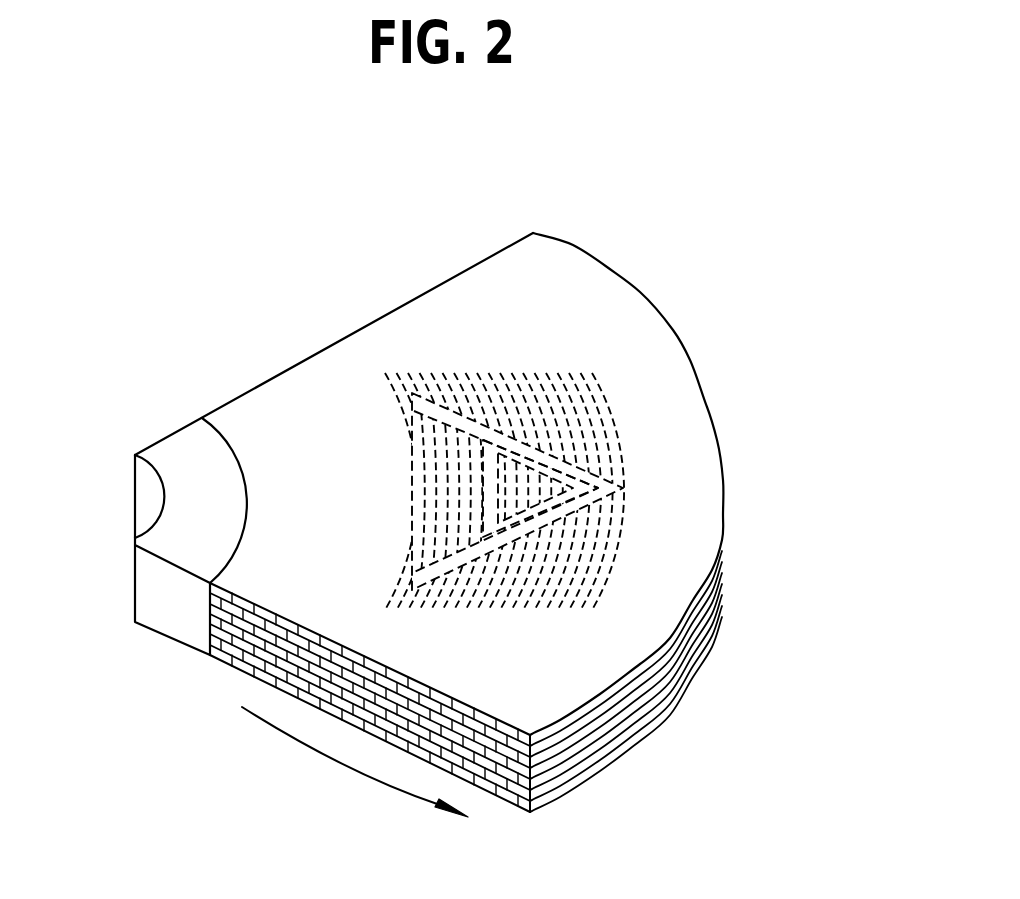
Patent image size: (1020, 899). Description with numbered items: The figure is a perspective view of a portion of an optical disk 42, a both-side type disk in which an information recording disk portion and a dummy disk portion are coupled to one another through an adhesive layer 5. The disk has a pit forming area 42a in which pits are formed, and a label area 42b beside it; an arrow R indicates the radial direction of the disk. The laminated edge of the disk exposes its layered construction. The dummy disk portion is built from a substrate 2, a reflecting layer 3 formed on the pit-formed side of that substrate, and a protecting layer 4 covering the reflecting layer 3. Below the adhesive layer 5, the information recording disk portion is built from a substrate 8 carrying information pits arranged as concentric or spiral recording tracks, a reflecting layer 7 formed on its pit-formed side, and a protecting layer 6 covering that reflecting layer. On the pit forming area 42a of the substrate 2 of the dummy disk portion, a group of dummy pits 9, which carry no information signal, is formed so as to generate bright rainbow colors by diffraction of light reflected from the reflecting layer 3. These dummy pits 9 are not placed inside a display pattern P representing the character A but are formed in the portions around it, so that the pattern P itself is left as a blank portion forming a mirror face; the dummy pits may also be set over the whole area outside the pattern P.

The optical disk 42 is at (449, 521).
The pit forming area 42a is at (353, 353).
The label area 42b is at (176, 445).
The dummy pits 9 is at (417, 500).
The display pattern P is at (597, 482).
The substrate 2 is at (542, 735).
The reflecting layer 3 is at (552, 745).
The protecting layer 4 is at (565, 752).
The adhesive layer 5 is at (575, 757).
The protecting layer 6 is at (565, 767).
The reflecting layer 7 is at (557, 785).
The substrate 8 is at (540, 802).
The arrow indicating radial direction R is at (377, 775).